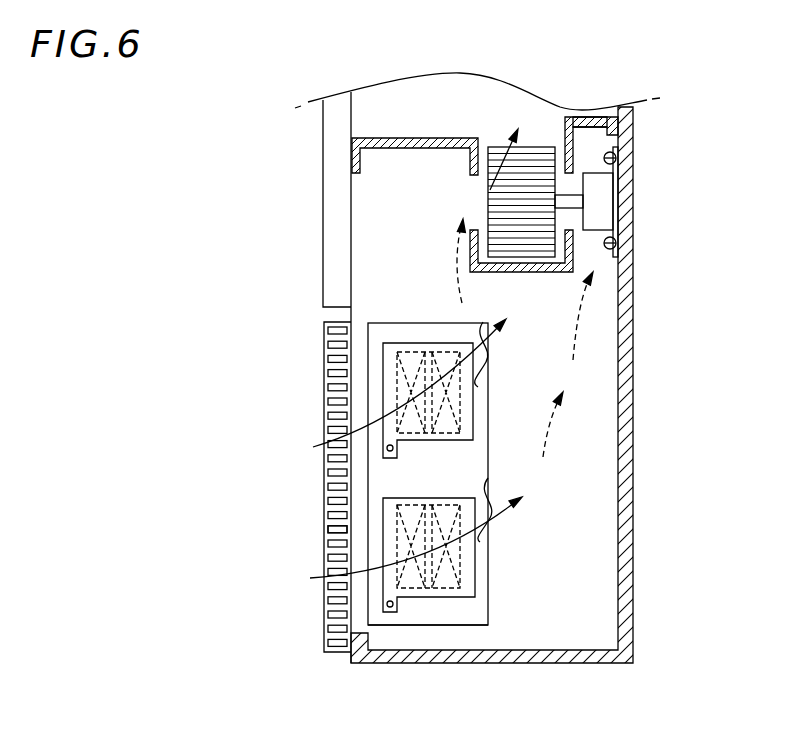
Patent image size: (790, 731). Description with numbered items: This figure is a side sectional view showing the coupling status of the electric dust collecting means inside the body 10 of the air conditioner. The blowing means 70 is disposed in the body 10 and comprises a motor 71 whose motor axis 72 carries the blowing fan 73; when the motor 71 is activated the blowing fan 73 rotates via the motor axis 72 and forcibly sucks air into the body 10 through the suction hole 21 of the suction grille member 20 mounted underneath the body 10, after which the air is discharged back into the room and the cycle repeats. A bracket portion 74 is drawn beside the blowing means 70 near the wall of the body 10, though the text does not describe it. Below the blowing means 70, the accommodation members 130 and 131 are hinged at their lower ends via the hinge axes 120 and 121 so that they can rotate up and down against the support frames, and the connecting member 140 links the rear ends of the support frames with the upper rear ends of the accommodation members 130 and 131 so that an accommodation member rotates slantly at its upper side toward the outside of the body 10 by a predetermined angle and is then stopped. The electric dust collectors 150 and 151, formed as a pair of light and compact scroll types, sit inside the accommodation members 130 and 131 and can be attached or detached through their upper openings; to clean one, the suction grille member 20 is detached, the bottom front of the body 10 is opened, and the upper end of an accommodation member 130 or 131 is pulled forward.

The body 10 is at (628, 292).
The suction grille member 20 is at (316, 364).
The suction hole 21 is at (340, 525).
The blowing means 70 is at (610, 195).
The motor 71 is at (602, 213).
The motor axis 72 is at (568, 202).
The blowing fan 73 is at (507, 178).
The bracket top portion 74 is at (603, 118).
The hinge axis 120 is at (386, 450).
The hinge axis 121 is at (383, 605).
The accommodation member 130 is at (417, 343).
The accommodation member 131 is at (425, 598).
The connecting member 140 is at (485, 365).
The electric dust collector 150 is at (457, 392).
The electric dust collector 151 is at (457, 548).